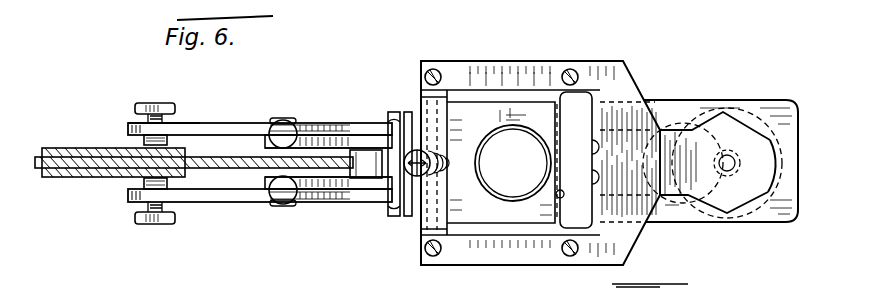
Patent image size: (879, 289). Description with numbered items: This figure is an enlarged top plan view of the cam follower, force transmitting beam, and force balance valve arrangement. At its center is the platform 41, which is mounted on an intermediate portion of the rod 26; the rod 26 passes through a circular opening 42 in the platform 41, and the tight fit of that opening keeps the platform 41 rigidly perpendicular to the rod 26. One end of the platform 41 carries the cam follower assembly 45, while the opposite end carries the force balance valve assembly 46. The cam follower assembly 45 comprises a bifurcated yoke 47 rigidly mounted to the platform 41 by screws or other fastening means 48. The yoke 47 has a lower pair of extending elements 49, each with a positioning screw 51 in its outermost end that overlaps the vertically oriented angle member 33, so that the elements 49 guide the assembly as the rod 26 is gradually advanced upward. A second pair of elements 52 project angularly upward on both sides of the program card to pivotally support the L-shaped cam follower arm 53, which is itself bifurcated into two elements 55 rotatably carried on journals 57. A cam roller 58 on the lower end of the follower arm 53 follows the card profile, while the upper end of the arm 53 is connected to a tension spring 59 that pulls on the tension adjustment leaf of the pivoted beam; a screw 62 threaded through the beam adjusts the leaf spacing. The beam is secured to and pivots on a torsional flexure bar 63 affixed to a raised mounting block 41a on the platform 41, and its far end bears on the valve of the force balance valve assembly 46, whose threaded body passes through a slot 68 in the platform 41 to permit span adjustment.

The angle member 33 is at (70, 148).
The positioning screw 51 is at (138, 104).
The bifurcated yoke 47 is at (186, 116).
The extending element 49 is at (201, 122).
The journal 57 is at (264, 128).
The follower arm element 55 is at (304, 125).
The upwardly projecting element 52 is at (328, 126).
The L-shaped cam follower arm 53 is at (351, 126).
The fastening means 48 is at (403, 116).
The cam roller 58 is at (366, 202).
The cam follower assembly 45 is at (333, 214).
The tension spring 59 is at (433, 172).
The torsional flexure bar 63 is at (588, 91).
The screw 62 is at (425, 250).
The circular opening 42 is at (500, 132).
The rod 26 is at (536, 128).
The force balance valve assembly 46 is at (742, 97).
The slot 68 is at (783, 160).
The platform 41 is at (778, 253).
The raised mounting block 41a is at (562, 192).